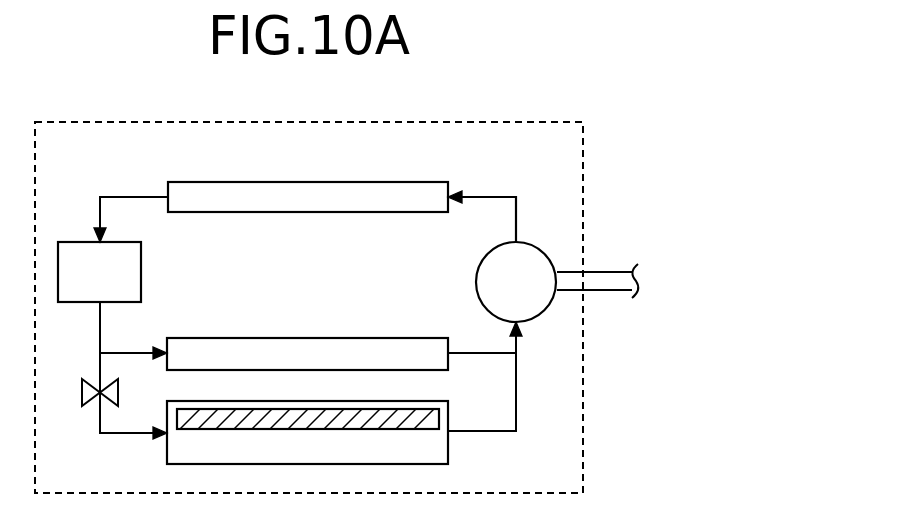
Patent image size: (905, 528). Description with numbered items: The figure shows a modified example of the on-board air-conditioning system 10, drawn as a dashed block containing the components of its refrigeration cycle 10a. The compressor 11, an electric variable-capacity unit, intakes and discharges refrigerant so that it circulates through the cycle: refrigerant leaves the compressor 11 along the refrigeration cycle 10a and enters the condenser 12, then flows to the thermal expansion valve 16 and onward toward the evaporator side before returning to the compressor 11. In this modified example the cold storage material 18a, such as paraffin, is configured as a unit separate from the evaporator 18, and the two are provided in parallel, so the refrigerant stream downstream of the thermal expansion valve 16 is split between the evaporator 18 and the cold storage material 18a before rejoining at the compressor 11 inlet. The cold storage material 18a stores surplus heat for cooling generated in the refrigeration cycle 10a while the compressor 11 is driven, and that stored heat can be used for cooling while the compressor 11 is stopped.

The air-conditioning system 10 is at (578, 108).
The refrigeration cycle 10a is at (483, 196).
The compressor 11 is at (533, 244).
The condenser 12 is at (412, 171).
The thermal expansion valve 16 is at (141, 272).
The evaporator 18 is at (410, 336).
The cold storage material 18a is at (448, 455).